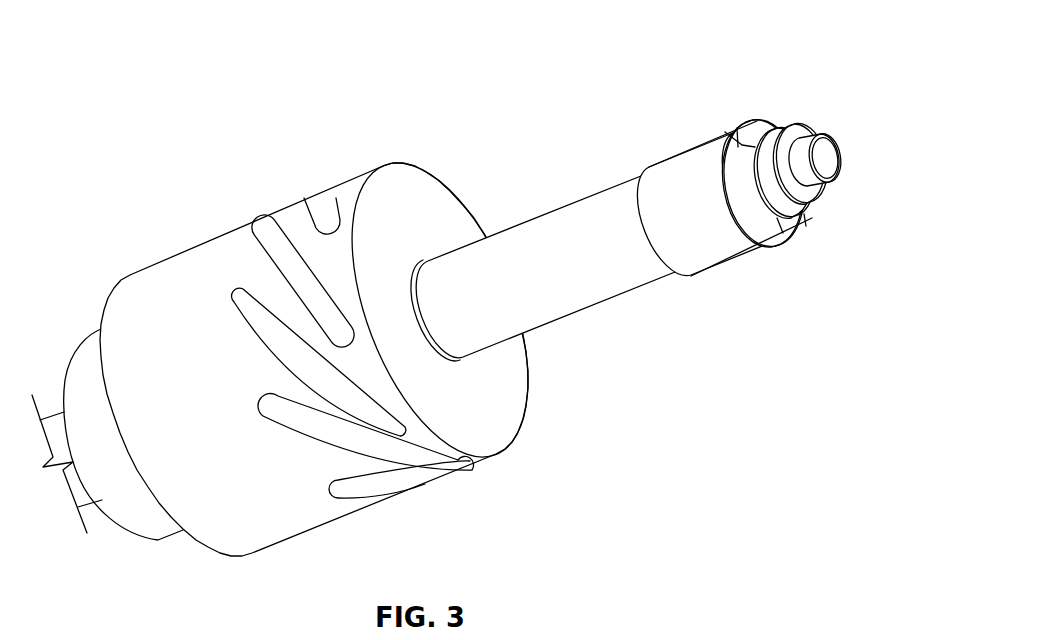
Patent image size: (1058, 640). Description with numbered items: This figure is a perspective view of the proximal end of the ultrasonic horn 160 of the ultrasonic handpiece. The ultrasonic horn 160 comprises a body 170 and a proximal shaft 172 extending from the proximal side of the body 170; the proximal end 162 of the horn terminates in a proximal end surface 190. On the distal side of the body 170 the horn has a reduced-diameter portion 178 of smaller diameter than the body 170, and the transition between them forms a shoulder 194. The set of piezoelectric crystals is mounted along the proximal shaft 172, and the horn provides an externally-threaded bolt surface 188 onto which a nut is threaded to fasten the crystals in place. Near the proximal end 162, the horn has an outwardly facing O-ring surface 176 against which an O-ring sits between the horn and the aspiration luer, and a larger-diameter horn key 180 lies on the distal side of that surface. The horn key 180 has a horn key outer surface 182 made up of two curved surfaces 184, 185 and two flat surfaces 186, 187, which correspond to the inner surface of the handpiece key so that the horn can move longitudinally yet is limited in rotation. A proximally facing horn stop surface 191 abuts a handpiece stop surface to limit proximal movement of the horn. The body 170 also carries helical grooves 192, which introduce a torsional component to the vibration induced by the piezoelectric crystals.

The ultrasonic horn 160 is at (176, 162).
The proximal end 162 is at (822, 240).
The body 170 is at (160, 325).
The proximal shaft 172 is at (586, 291).
The O-ring surface 176 is at (798, 153).
The reduced-diameter portion 178 is at (74, 365).
The horn key 180 is at (727, 256).
The horn key outer surface 182 is at (778, 222).
The curved surface 184 is at (792, 224).
The curved surface 185 is at (778, 128).
The flat surface 186 is at (730, 132).
The flat surface 187 is at (812, 218).
The externally-threaded bolt surface 188 is at (701, 277).
The proximal end surface 190 is at (833, 147).
The horn stop surface 191 is at (755, 147).
The helical grooves 192 is at (311, 220).
The shoulder 194 is at (103, 304).